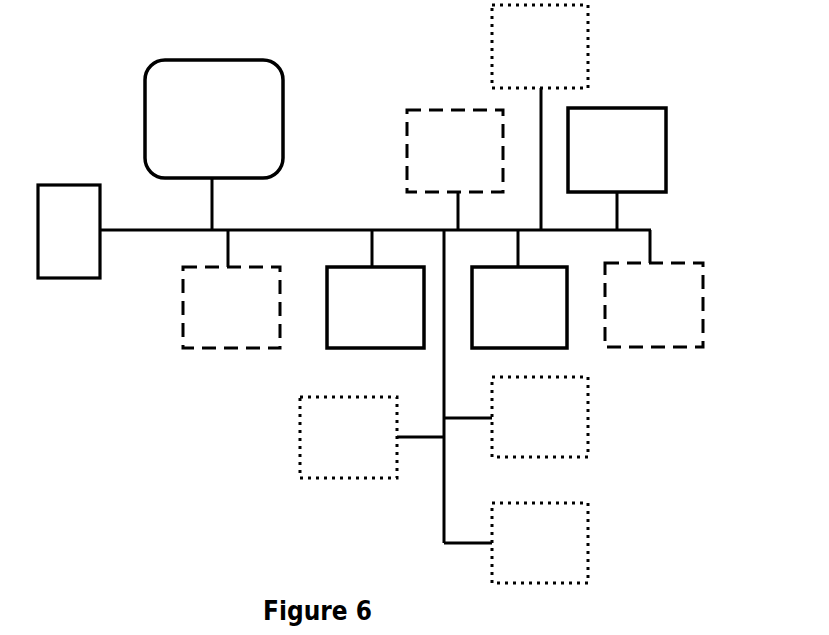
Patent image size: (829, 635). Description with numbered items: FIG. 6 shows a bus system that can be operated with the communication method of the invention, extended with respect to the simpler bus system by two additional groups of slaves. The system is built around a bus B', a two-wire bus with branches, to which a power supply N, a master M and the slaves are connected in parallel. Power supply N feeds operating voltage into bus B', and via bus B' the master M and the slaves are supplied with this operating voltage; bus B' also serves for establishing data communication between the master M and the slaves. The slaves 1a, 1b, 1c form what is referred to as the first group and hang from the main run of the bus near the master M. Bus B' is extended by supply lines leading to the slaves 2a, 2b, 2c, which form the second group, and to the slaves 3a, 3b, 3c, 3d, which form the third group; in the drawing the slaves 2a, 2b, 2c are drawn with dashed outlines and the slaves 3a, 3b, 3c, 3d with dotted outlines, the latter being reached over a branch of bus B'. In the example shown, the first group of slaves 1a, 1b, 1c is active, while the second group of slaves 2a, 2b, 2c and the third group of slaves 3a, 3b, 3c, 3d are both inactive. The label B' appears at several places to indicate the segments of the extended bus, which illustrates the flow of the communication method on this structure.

The power supply N is at (69, 231).
The master M is at (214, 145).
The slave 1a is at (375, 289).
The slave 1b is at (519, 289).
The slave 1c is at (617, 169).
The slave 2a is at (231, 289).
The slave 2b is at (455, 170).
The slave 2c is at (654, 288).
The slave 3a is at (516, 417).
The slave 3b is at (372, 437).
The slave 3c is at (516, 543).
The slave 3d is at (540, 117).
The bus B' is at (418, 368).